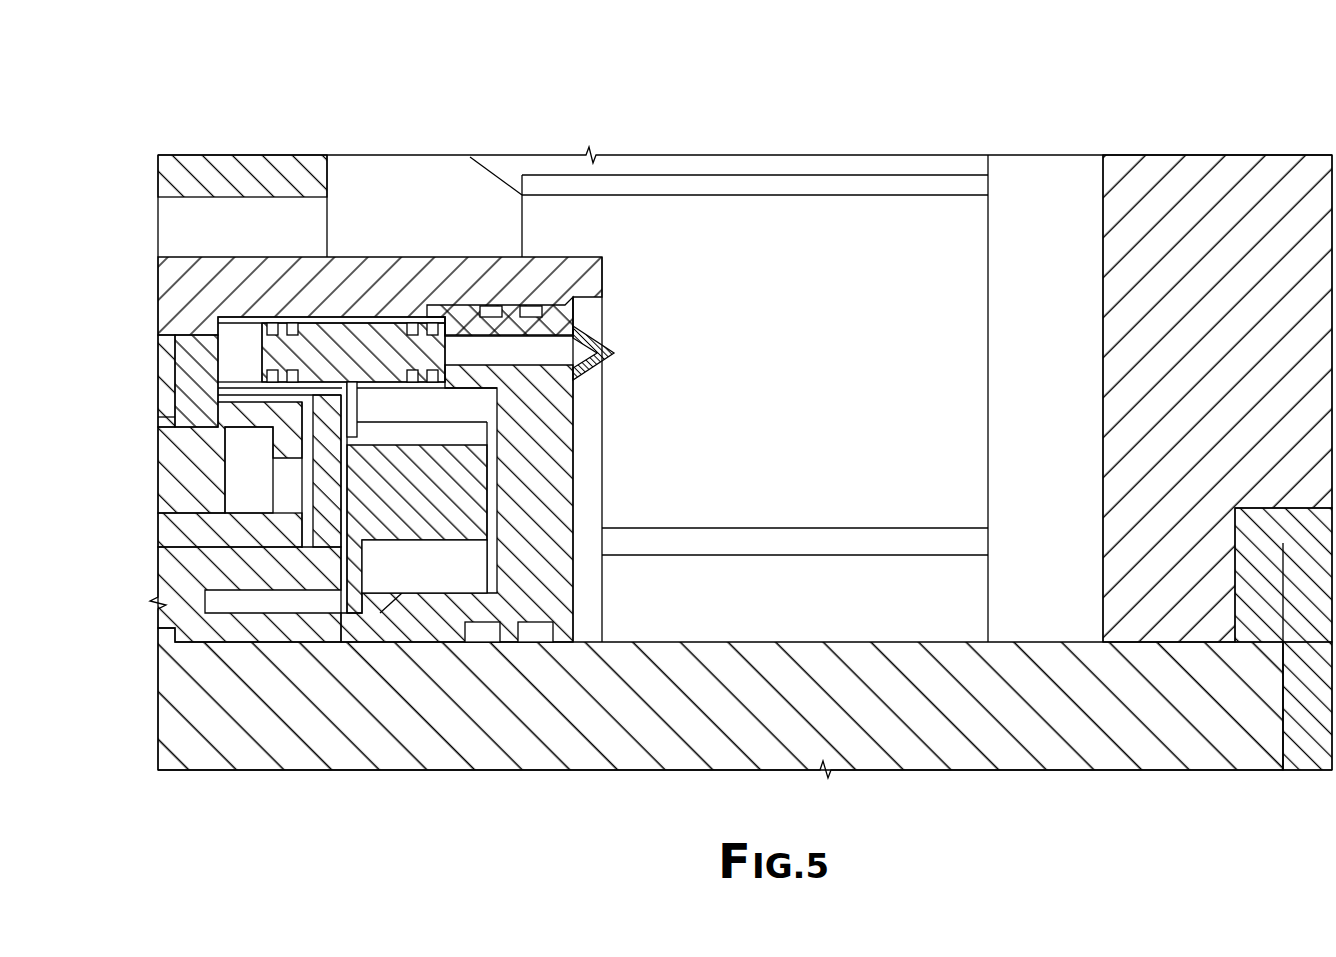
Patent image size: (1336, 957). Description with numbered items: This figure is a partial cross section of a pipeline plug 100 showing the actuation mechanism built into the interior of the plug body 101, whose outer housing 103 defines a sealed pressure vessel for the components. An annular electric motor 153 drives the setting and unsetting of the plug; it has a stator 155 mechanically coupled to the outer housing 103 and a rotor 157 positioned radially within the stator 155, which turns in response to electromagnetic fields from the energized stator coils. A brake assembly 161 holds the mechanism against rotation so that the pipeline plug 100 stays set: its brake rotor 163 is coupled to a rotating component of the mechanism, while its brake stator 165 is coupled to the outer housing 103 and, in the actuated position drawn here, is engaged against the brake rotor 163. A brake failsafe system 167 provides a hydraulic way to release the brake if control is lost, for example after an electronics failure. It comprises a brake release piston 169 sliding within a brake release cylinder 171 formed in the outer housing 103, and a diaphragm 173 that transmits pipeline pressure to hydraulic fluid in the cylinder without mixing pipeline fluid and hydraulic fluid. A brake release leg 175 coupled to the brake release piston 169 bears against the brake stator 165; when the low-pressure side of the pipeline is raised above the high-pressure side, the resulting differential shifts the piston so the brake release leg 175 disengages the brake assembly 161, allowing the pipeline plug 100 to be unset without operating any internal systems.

The pipeline plug 100 is at (115, 118).
The plug body 101 is at (142, 283).
The outer housing 103 is at (490, 258).
The electric motor 153 is at (138, 457).
The stator 155 is at (170, 487).
The rotor 157 is at (165, 527).
The brake assembly 161 is at (402, 570).
The brake rotor 163 is at (441, 520).
The brake stator 165 is at (326, 527).
The brake failsafe system 167 is at (422, 136).
The brake release piston 169 is at (362, 345).
The brake release cylinder 171 is at (238, 343).
The diaphragm 173 is at (620, 354).
The brake release leg 175 is at (175, 395).